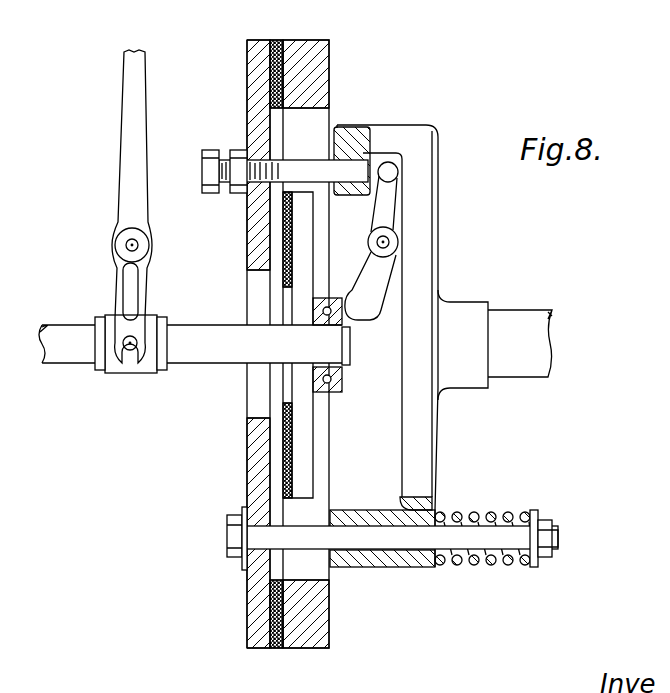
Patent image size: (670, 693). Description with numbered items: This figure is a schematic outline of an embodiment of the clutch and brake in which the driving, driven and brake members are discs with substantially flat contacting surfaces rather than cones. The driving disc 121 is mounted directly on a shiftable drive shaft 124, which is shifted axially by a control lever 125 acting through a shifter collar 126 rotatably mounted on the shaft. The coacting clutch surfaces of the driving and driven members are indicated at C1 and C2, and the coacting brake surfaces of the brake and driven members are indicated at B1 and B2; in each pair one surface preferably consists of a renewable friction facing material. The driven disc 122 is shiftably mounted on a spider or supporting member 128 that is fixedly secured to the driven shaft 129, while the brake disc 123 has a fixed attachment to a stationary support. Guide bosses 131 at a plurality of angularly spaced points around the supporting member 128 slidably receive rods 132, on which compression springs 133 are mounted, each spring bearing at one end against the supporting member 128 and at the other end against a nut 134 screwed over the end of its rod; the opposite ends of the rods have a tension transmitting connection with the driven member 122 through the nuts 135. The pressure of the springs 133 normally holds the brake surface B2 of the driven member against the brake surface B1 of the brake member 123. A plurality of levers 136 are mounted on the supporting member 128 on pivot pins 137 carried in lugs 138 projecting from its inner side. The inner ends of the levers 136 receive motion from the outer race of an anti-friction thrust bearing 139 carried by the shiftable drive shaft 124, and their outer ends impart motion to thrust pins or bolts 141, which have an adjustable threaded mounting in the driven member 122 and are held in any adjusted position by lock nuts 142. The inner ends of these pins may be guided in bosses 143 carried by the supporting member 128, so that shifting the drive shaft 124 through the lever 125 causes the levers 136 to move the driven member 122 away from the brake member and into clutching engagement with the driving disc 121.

The driving disc 121 is at (301, 250).
The driven disc 122 is at (247, 100).
The brake disc 123 is at (323, 65).
The shiftable drive shaft 124 is at (62, 365).
The control lever 125 is at (122, 103).
The shifter collar 126 is at (107, 313).
The spider or supporting member 128 is at (427, 445).
The driven shaft 129 is at (518, 310).
The guide bosses 131 is at (392, 560).
The rods 132 is at (455, 565).
The compression springs 133 is at (488, 566).
The nut 134 is at (545, 565).
The nuts 135 is at (226, 546).
The levers 136 is at (377, 282).
The pivot pins 137 is at (392, 243).
The lugs 138 is at (398, 228).
The anti-friction thrust bearing 139 is at (338, 392).
The thrust pins or bolts 141 is at (245, 192).
The lock nuts 142 is at (238, 150).
The bosses 143 is at (351, 195).
The clutch surface C1 is at (276, 446).
The clutch surface C2 is at (270, 483).
The brake surface B1 is at (270, 608).
The brake surface B2 is at (270, 630).